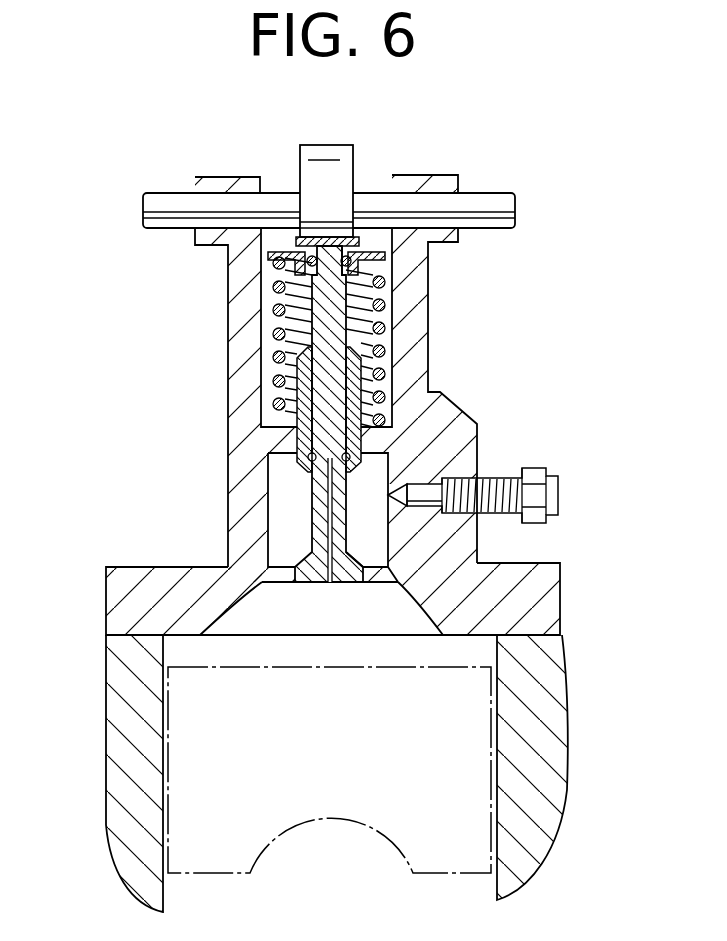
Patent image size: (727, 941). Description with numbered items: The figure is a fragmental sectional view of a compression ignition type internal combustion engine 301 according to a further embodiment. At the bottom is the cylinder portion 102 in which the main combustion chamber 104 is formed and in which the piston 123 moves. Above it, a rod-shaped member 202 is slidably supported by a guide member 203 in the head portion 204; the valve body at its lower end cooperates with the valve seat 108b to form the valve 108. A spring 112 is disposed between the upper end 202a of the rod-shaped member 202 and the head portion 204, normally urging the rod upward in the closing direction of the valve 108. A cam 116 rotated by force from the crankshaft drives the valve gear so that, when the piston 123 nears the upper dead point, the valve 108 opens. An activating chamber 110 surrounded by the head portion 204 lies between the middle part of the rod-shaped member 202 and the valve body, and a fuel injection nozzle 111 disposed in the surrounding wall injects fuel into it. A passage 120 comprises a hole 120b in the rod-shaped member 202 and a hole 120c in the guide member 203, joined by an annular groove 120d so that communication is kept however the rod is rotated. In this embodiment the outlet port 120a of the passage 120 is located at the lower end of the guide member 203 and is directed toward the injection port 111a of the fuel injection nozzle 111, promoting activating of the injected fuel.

The internal combustion engine 301 is at (233, 167).
The cam 116 is at (328, 160).
The upper end of the rod-shaped member 202a is at (386, 256).
The rod-shaped member 202 is at (322, 300).
The spring 112 is at (425, 308).
The guide member 203 is at (305, 373).
The head portion 204 is at (238, 414).
The hole in the guide member 120c is at (372, 452).
The outlet port 120a is at (362, 462).
The injection port 111a is at (392, 490).
The fuel injection nozzle 111 is at (498, 476).
The annular groove 120d is at (308, 457).
The hole in the rod-shaped member 120b is at (329, 497).
The activating chamber 110 is at (290, 527).
The main combustion chamber 104 is at (286, 627).
The passage 120 is at (331, 584).
The valve 108 is at (292, 584).
The valve seat 108b is at (410, 595).
The cylinder portion 102 is at (120, 748).
The piston 123 is at (473, 753).